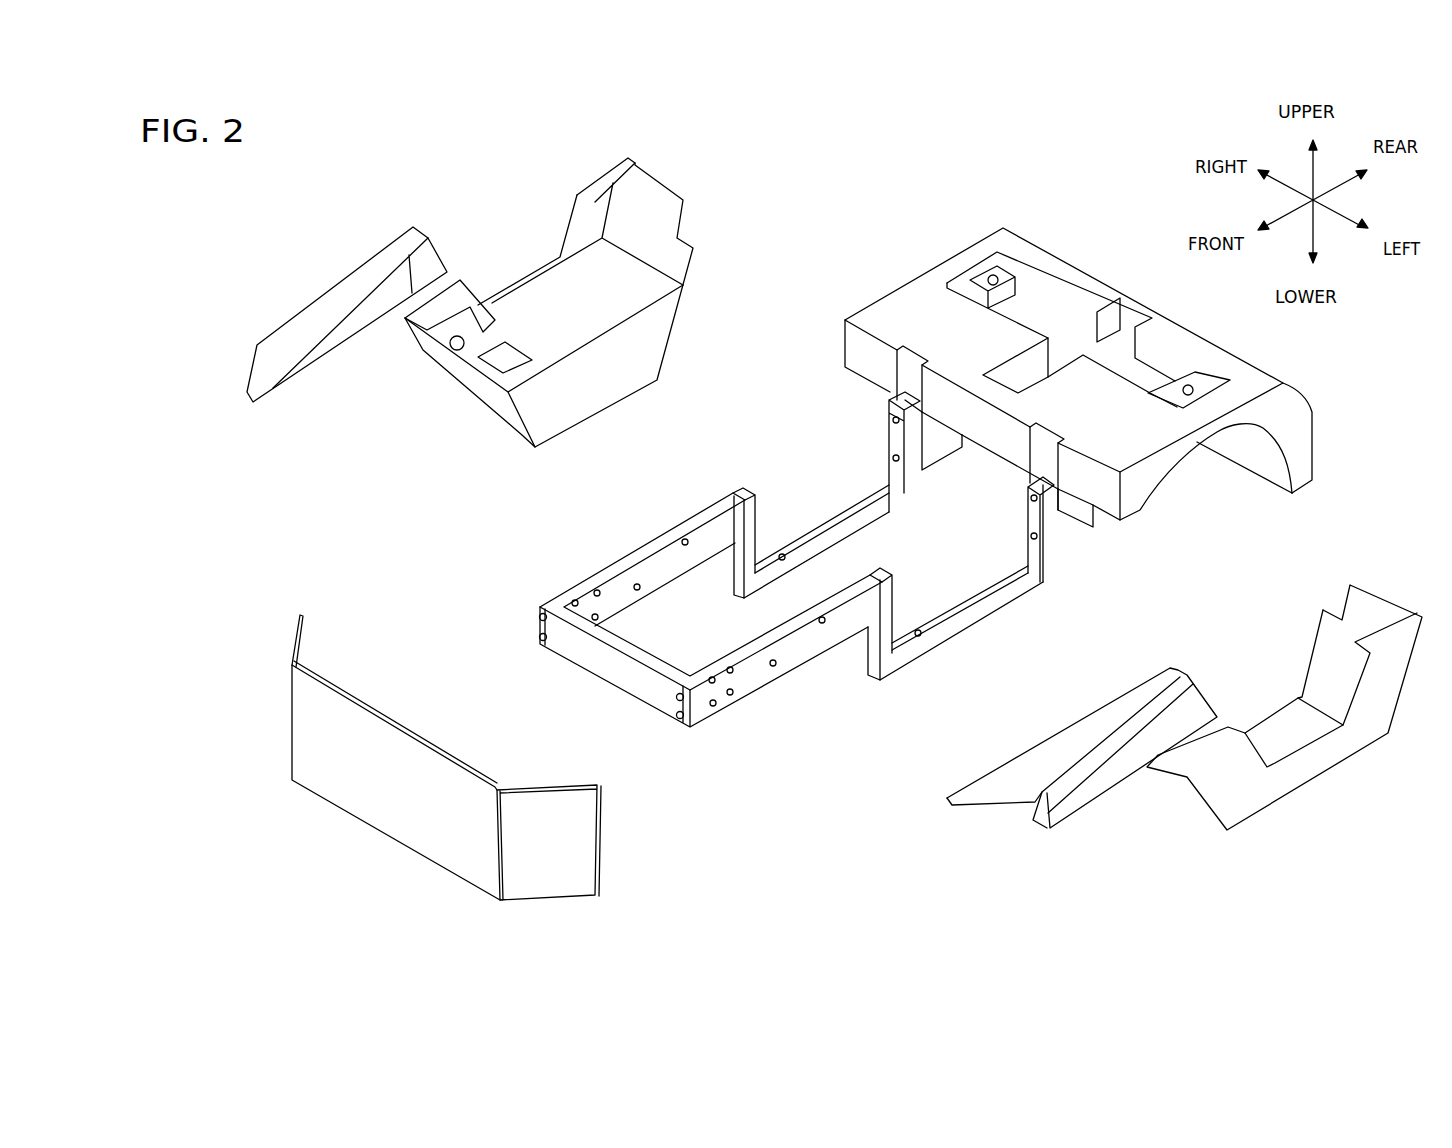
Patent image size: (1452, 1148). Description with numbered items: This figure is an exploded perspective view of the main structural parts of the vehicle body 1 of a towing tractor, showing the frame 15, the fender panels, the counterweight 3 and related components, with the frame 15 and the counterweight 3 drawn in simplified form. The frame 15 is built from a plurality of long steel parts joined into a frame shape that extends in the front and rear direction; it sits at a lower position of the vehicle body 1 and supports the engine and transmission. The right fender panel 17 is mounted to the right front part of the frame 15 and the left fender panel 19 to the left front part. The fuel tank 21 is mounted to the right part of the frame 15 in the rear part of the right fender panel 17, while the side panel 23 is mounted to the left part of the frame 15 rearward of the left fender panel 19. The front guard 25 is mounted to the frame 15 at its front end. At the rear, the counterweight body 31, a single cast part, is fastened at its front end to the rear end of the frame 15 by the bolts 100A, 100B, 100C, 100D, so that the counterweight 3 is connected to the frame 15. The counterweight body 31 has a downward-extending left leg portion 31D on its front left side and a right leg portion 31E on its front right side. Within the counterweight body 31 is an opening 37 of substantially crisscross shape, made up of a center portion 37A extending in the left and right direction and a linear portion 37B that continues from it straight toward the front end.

The vehicle body 1 is at (735, 793).
The counterweight 3 is at (1056, 378).
The frame 15 is at (836, 561).
The right fender panel 17 is at (330, 305).
The left fender panel 19 is at (1107, 773).
The fuel tank 21 is at (605, 394).
The side panel 23 is at (1317, 758).
The front guard 25 is at (388, 812).
The counterweight body 31 is at (1150, 432).
The left leg portion 31D is at (1075, 505).
The right leg portion 31E is at (895, 410).
The opening 37 is at (1077, 338).
The center portion 37A is at (1022, 305).
The linear portion 37B is at (1129, 395).
The bolt 100A is at (1062, 505).
The bolt 100B is at (1048, 553).
The bolt 100C is at (918, 428).
The bolt 100D is at (903, 458).